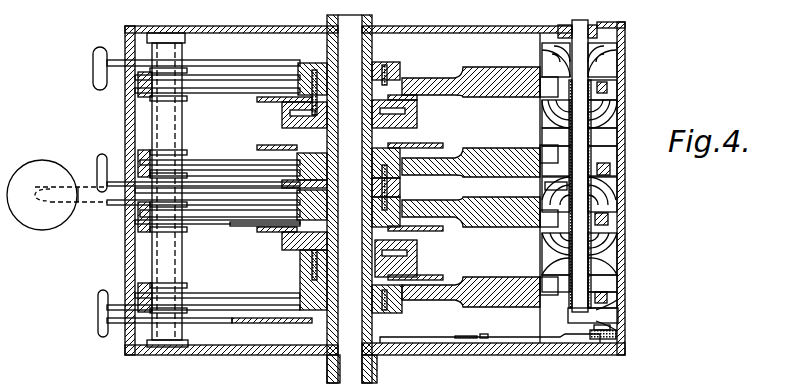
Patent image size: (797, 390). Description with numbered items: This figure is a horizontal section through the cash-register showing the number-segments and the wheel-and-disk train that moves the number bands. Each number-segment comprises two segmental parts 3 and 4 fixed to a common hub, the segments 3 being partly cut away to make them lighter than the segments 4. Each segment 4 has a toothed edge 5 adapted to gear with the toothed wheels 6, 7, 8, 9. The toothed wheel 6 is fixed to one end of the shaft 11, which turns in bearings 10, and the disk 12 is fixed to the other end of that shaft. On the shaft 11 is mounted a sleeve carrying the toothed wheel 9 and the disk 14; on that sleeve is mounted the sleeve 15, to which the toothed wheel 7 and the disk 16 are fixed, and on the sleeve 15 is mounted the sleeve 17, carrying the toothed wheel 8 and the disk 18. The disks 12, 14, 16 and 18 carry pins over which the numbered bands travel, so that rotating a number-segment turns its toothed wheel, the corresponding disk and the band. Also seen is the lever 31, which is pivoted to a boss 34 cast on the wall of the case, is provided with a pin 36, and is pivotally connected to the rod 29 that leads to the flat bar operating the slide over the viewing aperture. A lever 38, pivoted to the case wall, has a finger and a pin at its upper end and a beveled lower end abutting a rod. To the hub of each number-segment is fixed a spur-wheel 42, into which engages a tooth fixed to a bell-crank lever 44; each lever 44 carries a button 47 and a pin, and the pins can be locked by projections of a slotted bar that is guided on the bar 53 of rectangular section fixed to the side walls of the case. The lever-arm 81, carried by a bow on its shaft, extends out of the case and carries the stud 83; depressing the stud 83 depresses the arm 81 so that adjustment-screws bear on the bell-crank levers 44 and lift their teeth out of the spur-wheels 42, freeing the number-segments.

The segmental part 3 is at (222, 93).
The segmental part 4 is at (497, 97).
The toothed edge 5 is at (548, 92).
The toothed wheel 6 is at (606, 296).
The toothed wheel 7 is at (608, 220).
The toothed wheel 8 is at (610, 168).
The toothed wheel 9 is at (607, 88).
The bearings 10 is at (588, 25).
The shaft 11 is at (588, 283).
The disk 12 is at (608, 55).
The disk 14 is at (612, 238).
The sleeve 15 is at (600, 137).
The disk 16 is at (600, 118).
The sleeve 17 is at (604, 188).
The disk 18 is at (606, 202).
The rod 29 is at (614, 352).
The lever 31 is at (422, 343).
The boss 34 is at (378, 347).
The pin 36 is at (486, 334).
The lever 38 is at (462, 336).
The spur-wheel 42 is at (306, 63).
The bell-crank lever 44 is at (236, 64).
The button 47 is at (94, 72).
The bar 53 is at (599, 343).
The lever-arm 81 is at (88, 200).
The stud 83 is at (57, 195).